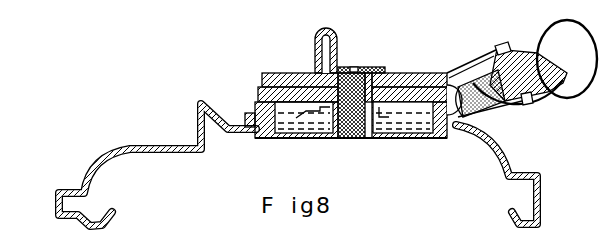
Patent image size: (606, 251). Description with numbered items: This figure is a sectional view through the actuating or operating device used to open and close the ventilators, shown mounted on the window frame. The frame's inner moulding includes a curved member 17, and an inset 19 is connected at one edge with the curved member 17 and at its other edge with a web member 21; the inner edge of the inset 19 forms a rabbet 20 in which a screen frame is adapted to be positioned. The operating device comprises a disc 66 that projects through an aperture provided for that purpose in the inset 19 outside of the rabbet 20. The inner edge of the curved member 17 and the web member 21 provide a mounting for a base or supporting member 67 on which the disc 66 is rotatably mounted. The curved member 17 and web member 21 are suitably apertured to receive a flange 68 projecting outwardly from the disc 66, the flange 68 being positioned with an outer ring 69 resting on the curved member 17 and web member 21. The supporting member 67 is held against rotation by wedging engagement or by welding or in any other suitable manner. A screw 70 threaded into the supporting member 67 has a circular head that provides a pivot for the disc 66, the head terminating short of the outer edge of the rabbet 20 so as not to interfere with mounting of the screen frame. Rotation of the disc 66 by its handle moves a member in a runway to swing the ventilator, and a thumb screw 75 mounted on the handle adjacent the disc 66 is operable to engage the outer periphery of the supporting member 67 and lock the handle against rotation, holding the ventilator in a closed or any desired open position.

The curved member 17 is at (477, 131).
The inset 19 is at (317, 62).
The rabbet 20 is at (343, 66).
The web member 21 is at (241, 133).
The disc 66 is at (264, 76).
The supporting member 67 is at (262, 91).
The flange 68 is at (258, 103).
The outer ring 69 is at (247, 116).
The screw 70 is at (364, 67).
The thumb screw 75 is at (566, 40).